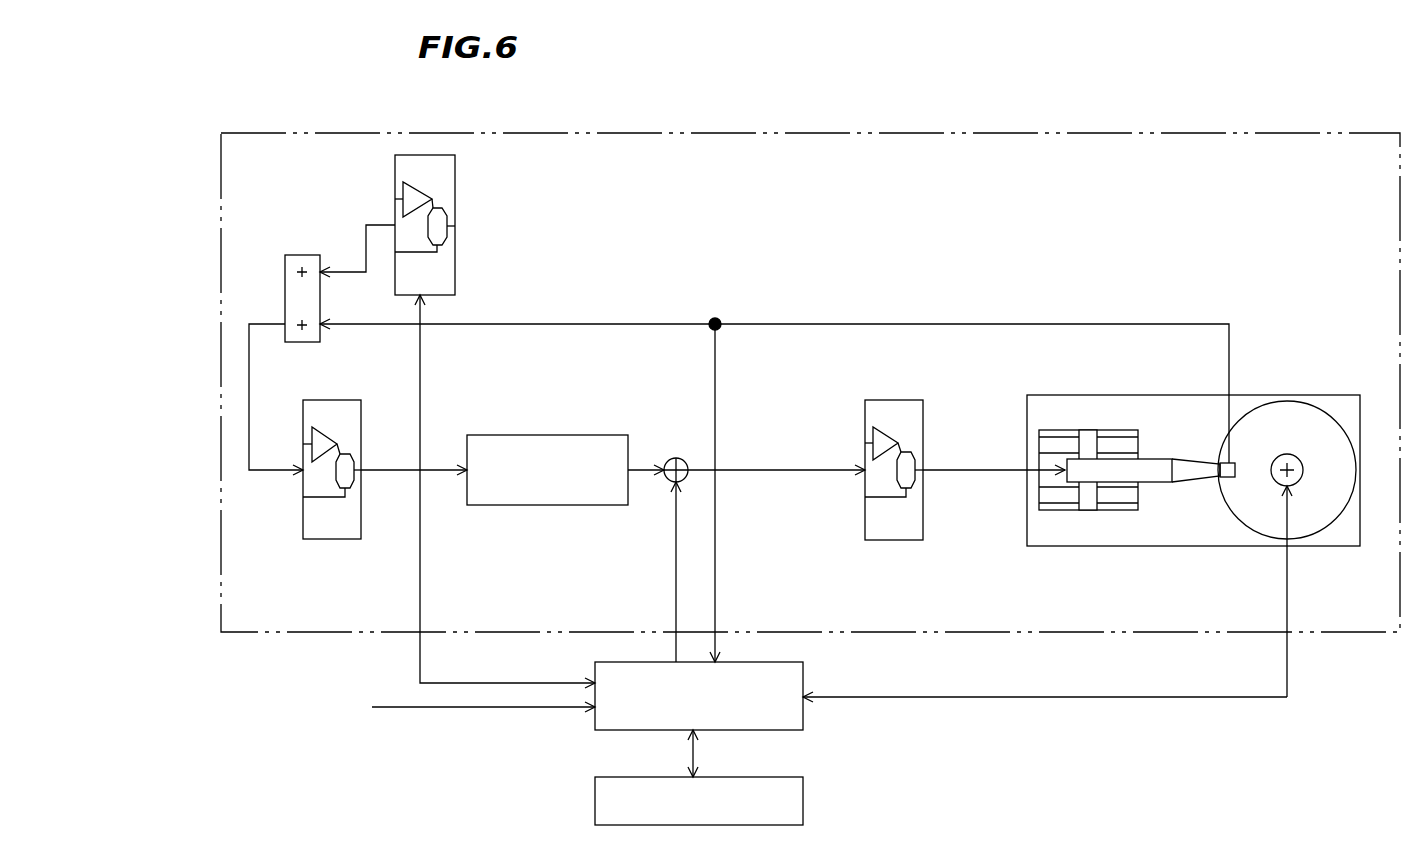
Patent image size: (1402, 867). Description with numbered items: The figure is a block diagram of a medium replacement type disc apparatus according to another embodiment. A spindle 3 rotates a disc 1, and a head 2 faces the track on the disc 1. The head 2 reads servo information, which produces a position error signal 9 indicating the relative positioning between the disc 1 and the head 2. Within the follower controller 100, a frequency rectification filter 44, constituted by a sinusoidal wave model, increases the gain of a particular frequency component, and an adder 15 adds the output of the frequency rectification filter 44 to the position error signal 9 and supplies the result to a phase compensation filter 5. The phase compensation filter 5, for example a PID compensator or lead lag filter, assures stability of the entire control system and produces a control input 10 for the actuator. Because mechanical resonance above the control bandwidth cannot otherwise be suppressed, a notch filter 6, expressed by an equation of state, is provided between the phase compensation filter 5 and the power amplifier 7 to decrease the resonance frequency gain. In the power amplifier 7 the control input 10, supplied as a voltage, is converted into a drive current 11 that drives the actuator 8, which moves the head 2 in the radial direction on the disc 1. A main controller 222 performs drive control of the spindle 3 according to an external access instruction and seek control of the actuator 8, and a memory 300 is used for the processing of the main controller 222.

The follower controller 100 is at (933, 133).
The frequency rectification filter 44 is at (455, 180).
The adder 15 is at (305, 255).
The position error signal 9 is at (790, 323).
The phase compensation filter 5 is at (330, 539).
The notch filter 6 is at (517, 435).
The power amplifier 7 is at (888, 400).
The control input 10 is at (797, 470).
The drive current 11 is at (990, 470).
The actuator 8 is at (1090, 510).
The head 2 is at (1222, 465).
The disc 1 is at (1302, 410).
The spindle 3 is at (1300, 478).
The main controller 222 is at (803, 672).
The memory 300 is at (803, 804).